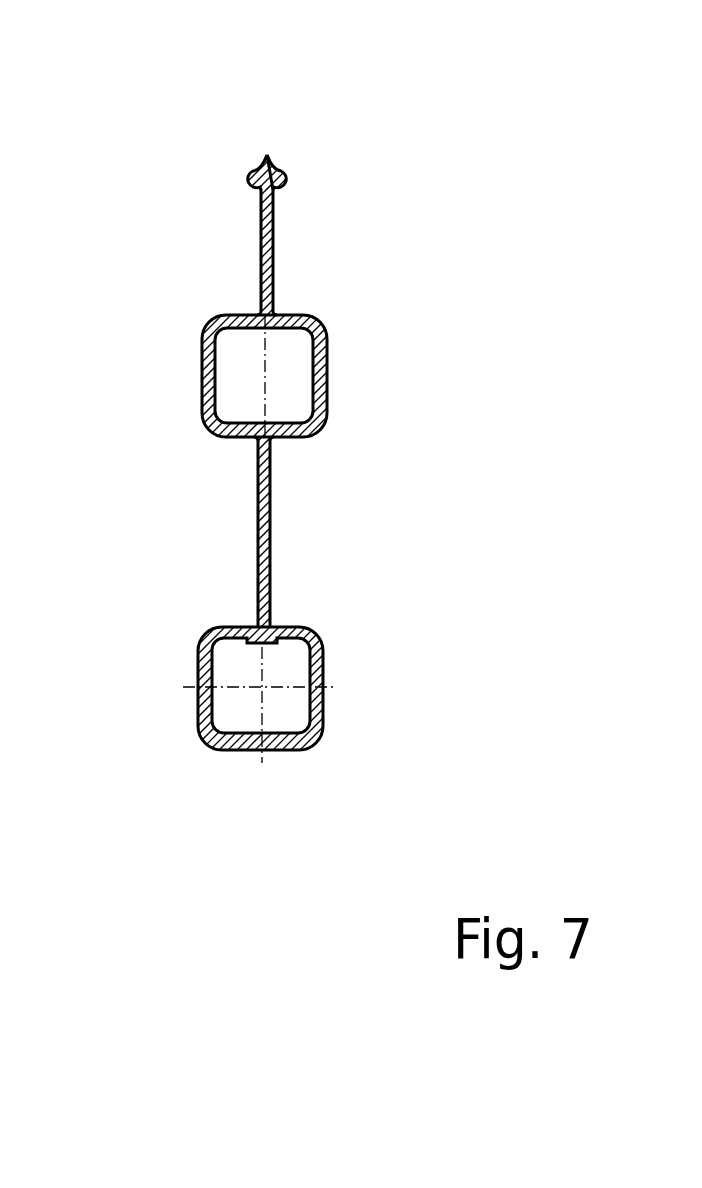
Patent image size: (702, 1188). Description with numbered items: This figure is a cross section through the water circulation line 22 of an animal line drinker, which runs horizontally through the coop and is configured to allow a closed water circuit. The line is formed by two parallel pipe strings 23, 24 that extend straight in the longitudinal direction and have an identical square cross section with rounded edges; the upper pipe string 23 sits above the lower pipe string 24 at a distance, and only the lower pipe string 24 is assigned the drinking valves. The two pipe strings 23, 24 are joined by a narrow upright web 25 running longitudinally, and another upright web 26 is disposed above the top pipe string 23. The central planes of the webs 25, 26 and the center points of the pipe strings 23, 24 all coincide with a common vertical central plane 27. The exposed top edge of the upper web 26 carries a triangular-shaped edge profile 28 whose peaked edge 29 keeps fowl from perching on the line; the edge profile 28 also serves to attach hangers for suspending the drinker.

The water circulation line 22 is at (85, 268).
The pipe string 23 is at (325, 377).
The pipe string 24 is at (323, 657).
The upright web 25 is at (270, 548).
The upright web 26 is at (273, 265).
The central plane 27 is at (268, 152).
The edge profile 28 is at (288, 177).
The peaked edge 29 is at (265, 157).